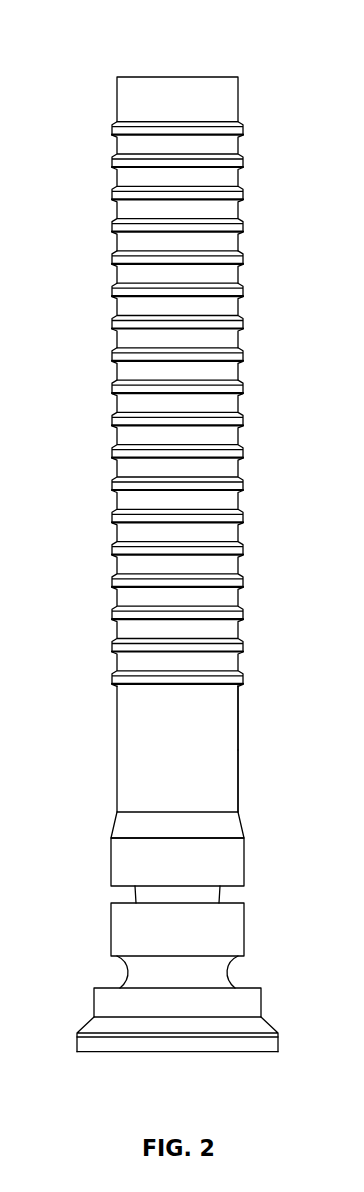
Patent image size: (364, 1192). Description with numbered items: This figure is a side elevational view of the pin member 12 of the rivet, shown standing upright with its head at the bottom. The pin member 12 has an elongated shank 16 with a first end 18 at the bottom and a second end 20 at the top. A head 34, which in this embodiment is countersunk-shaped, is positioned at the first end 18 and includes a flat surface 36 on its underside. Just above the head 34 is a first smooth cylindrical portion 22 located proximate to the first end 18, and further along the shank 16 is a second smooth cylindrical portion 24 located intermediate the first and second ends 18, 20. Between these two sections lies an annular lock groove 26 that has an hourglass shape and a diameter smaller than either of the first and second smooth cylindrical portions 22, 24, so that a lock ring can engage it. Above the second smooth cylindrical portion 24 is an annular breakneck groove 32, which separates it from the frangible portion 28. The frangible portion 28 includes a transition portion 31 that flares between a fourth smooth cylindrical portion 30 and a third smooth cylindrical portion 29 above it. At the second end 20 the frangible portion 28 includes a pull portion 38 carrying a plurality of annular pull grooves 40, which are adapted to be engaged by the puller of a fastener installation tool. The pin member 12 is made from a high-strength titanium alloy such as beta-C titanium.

The pin member 12 is at (96, 49).
The elongated shank 16 is at (117, 713).
The first end 18 is at (78, 1038).
The second end 20 is at (177, 77).
The first smooth cylindrical portion 22 is at (252, 1000).
The second smooth cylindrical portion 24 is at (224, 924).
The annular lock groove 26 is at (138, 982).
The frangible portion 28 is at (225, 775).
The third smooth cylindrical portion 29 is at (225, 718).
The fourth smooth cylindrical portion 30 is at (224, 857).
The transition portion 31 is at (125, 825).
The annular breakneck groove 32 is at (143, 896).
The head 34 is at (278, 1037).
The flat surface 36 is at (212, 1053).
The pull portion 38 is at (236, 258).
The annular pull grooves 40 is at (236, 360).